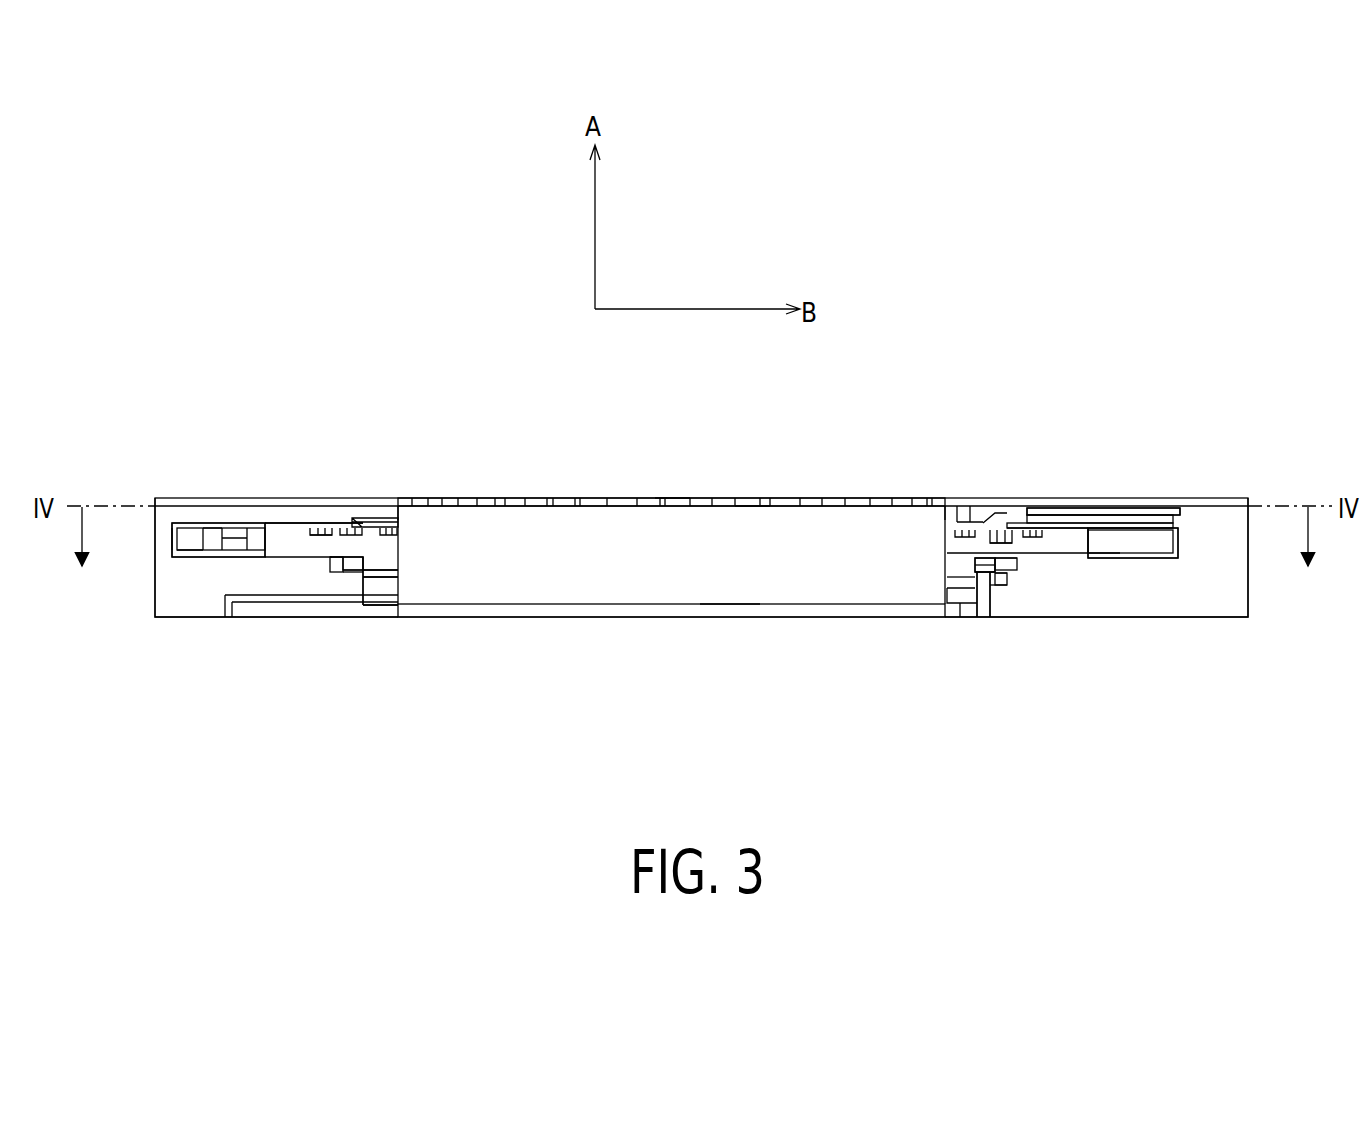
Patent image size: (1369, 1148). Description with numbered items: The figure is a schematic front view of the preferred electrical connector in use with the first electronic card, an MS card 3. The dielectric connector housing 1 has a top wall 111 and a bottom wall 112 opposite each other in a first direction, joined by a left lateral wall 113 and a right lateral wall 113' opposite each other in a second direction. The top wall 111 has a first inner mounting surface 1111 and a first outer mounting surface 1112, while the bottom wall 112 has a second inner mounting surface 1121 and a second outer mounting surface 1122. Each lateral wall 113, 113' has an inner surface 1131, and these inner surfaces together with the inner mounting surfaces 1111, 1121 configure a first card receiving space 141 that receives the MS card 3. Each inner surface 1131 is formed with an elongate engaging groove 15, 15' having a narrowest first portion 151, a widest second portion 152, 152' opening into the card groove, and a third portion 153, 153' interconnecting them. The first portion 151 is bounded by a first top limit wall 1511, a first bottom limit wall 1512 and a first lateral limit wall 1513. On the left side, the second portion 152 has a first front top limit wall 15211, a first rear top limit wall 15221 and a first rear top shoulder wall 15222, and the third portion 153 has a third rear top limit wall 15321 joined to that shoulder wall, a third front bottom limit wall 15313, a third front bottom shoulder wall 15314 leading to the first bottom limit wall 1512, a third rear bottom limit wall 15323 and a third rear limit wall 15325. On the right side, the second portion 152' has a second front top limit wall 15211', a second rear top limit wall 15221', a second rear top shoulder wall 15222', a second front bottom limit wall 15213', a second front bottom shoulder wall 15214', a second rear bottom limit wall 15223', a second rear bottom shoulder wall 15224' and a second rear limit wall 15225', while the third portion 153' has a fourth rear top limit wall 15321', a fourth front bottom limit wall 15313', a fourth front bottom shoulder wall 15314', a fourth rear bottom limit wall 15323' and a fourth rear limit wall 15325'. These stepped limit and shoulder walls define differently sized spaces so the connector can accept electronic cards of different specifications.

The dielectric connector housing 1 is at (1246, 620).
The MS card 3 is at (637, 582).
The engaging groove 15 is at (285, 494).
The engaging groove 15' is at (1077, 527).
The top wall 111 is at (588, 503).
The bottom wall 112 is at (543, 610).
The left lateral wall 113 is at (276, 526).
The right lateral wall 113' is at (1134, 571).
The first card receiving space 141 is at (607, 558).
The first portion 151 is at (175, 497).
The second portion 152 is at (436, 499).
The second portion 152' is at (1031, 475).
The third portion 153 is at (311, 636).
The third portion 153' is at (1050, 506).
The first inner mounting surface 1111 is at (740, 516).
The first outer mounting surface 1112 is at (672, 498).
The second inner mounting surface 1121 is at (728, 590).
The second outer mounting surface 1122 is at (468, 618).
The inner surface 1131 is at (397, 513).
The first top limit wall 1511 is at (212, 542).
The first bottom limit wall 1512 is at (190, 555).
The first lateral limit wall 1513 is at (172, 536).
The first rear top limit wall 15221 is at (392, 423).
The first front top limit wall 15211 is at (414, 378).
The first rear top shoulder wall 15222 is at (353, 468).
The third rear top limit wall 15321 is at (304, 486).
The third front bottom shoulder wall 15314 is at (247, 628).
The third front bottom limit wall 15313 is at (304, 661).
The third rear bottom limit wall 15323 is at (291, 779).
The third rear limit wall 15325 is at (385, 662).
The second rear top limit wall 15221' is at (932, 423).
The second front top limit wall 15211' is at (928, 379).
The fourth rear top limit wall 15321' is at (1046, 455).
The second rear top shoulder wall 15222' is at (1004, 474).
The second rear limit wall 15225' is at (914, 625).
The second front bottom limit wall 15213' is at (949, 651).
The second rear bottom limit wall 15223' is at (958, 756).
The second front bottom shoulder wall 15214' is at (987, 705).
The second rear bottom shoulder wall 15224' is at (1005, 863).
The fourth front bottom limit wall 15313' is at (1068, 672).
The fourth rear bottom limit wall 15323' is at (1120, 796).
The fourth rear limit wall 15325' is at (1071, 647).
The fourth front bottom shoulder wall 15314' is at (1094, 629).